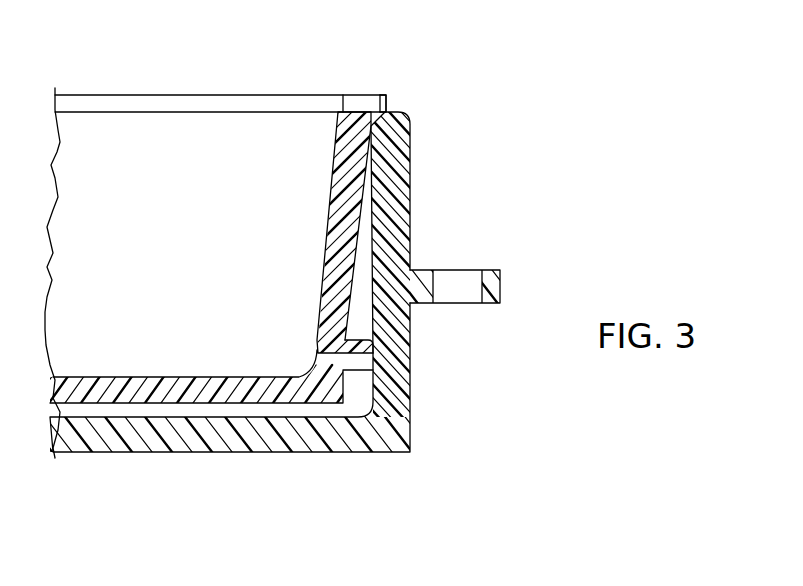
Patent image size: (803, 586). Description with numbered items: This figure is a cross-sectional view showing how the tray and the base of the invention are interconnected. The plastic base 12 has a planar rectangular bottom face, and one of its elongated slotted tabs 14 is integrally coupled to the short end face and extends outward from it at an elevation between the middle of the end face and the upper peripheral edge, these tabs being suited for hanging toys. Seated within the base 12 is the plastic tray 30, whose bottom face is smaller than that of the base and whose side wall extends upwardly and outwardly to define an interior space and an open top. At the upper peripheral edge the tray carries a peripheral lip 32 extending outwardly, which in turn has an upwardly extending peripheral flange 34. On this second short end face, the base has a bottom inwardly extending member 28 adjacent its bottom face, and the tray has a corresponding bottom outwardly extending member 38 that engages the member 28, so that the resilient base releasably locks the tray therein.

The plastic base 12 is at (382, 444).
The elongated slotted tabs 14 is at (502, 269).
The bottom inwardly extending member 28 is at (372, 340).
The plastic tray 30 is at (334, 163).
The peripheral lip 32 is at (344, 112).
The upwardly extending peripheral flange 34 is at (388, 97).
The bottom outwardly extending member 38 is at (353, 357).